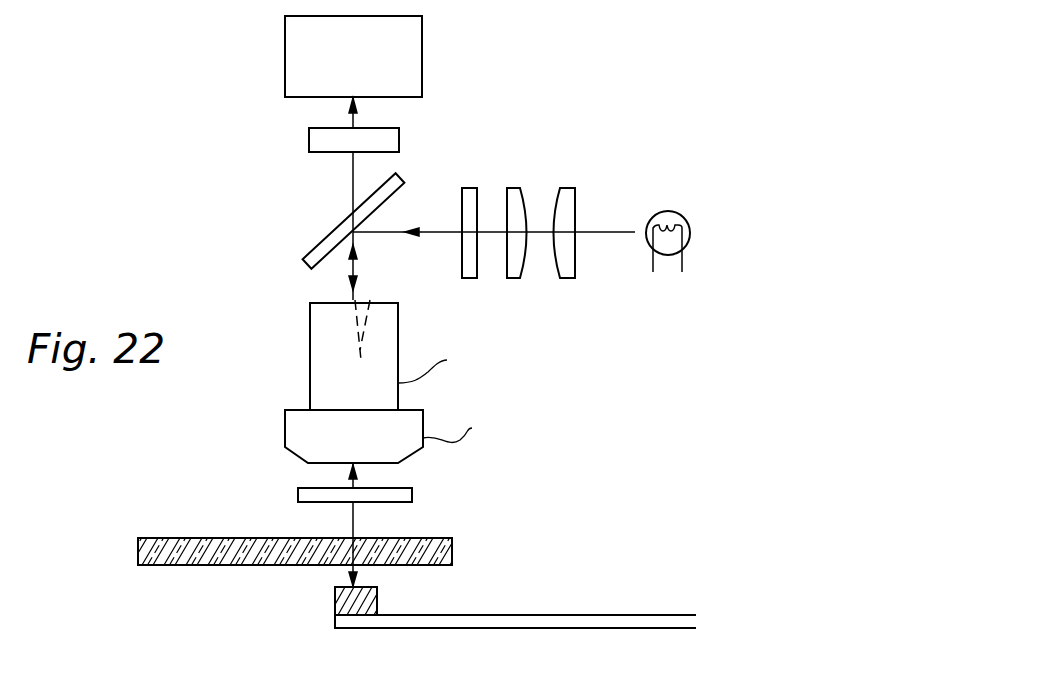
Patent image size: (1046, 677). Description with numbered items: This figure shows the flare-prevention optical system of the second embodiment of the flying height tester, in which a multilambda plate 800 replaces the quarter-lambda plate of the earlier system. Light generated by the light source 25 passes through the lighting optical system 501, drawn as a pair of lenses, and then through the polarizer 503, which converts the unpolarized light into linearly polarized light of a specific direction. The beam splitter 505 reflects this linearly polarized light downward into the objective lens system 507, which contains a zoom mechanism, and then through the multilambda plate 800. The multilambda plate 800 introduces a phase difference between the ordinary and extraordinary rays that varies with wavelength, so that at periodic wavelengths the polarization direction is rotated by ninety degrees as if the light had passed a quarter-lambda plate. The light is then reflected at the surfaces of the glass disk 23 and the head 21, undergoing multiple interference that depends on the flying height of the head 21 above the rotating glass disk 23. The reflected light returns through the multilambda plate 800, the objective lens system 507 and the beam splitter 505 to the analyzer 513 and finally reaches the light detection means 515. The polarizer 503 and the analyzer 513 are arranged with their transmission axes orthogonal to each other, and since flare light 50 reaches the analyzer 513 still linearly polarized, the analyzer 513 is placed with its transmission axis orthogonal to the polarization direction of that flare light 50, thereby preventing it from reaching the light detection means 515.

The light detection means 515 is at (285, 53).
The analyzer 513 is at (309, 140).
The beam splitter 505 is at (325, 238).
The polarizer 503 is at (467, 188).
The lighting optical system 501 is at (506, 188).
The light source 25 is at (698, 185).
The flare light 50 is at (368, 268).
The objective lens system containing a zoom mechanism 507 is at (667, 335).
The multilambda plate 800 is at (412, 495).
The glass disk 23 is at (170, 538).
The head 21 is at (335, 600).